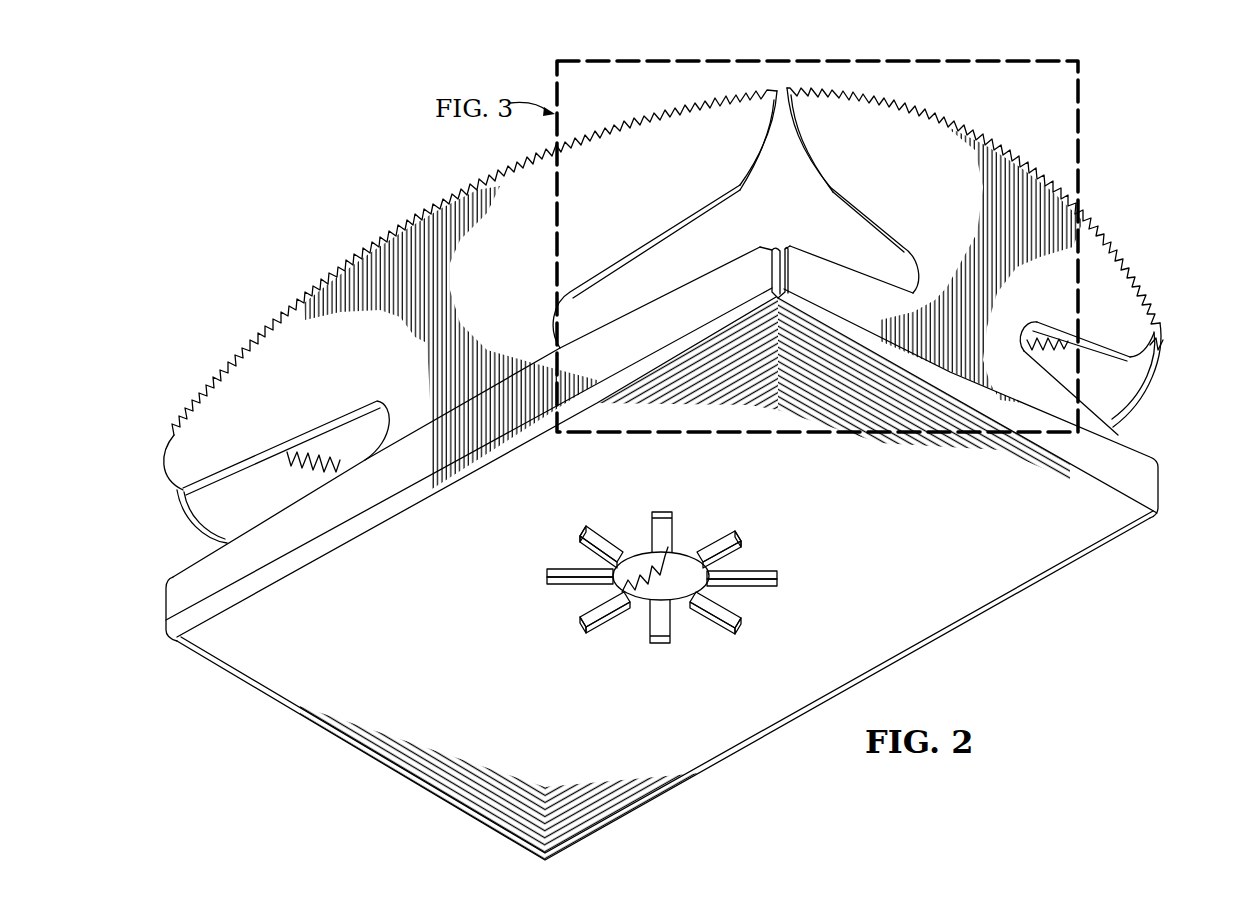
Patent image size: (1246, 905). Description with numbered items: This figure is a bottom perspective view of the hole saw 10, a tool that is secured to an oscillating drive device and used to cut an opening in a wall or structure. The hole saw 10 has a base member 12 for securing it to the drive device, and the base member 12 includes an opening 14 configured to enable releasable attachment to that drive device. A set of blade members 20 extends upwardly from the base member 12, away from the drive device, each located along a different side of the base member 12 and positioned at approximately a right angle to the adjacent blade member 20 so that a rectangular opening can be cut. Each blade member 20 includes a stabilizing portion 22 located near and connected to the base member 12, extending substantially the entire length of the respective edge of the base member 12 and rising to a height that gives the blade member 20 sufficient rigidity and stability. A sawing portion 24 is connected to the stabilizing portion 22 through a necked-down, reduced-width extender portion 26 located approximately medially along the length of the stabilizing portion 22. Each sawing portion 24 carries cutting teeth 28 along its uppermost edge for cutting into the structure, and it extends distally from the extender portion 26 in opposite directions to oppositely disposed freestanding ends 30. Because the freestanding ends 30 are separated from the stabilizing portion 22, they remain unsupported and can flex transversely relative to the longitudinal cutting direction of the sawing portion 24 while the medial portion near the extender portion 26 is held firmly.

The hole saw 10 is at (1054, 602).
The base member 12 is at (906, 546).
The opening 14 is at (657, 520).
The blade member 20 is at (283, 298).
The stabilizing portion 22 is at (1162, 478).
The sawing portion 24 is at (734, 155).
The extender portion 26 is at (567, 307).
The cutting teeth 28 is at (232, 372).
The freestanding end 30 is at (1162, 351).